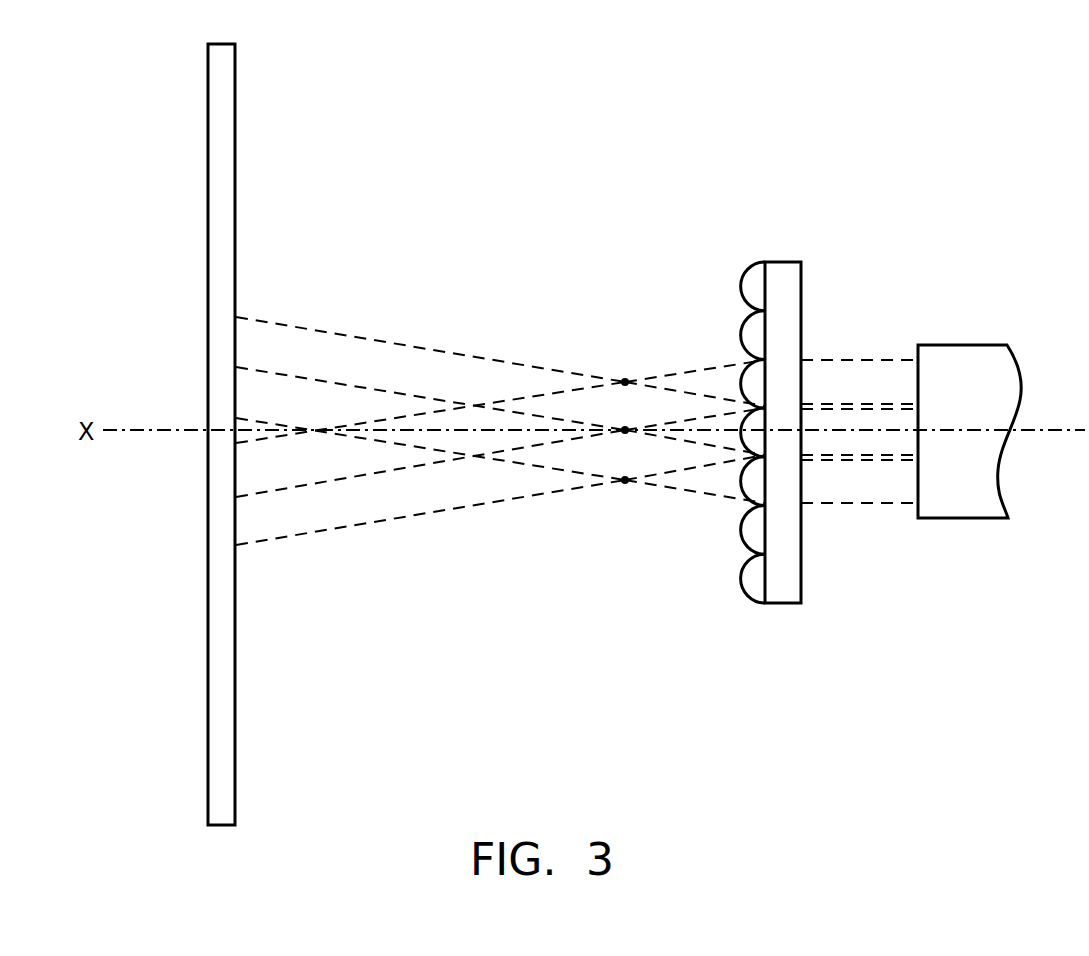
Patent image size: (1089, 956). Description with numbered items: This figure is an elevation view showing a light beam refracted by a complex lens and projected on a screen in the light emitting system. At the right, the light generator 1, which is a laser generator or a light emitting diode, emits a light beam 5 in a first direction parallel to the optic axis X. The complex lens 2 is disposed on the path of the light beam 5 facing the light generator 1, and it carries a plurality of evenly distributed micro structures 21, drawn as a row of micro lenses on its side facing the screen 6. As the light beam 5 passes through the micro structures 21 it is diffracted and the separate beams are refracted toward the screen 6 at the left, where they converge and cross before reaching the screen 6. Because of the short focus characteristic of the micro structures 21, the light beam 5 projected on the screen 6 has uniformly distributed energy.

The light generator 1 is at (965, 355).
The complex lens 2 is at (736, 368).
The micro structures 21 is at (748, 332).
The light beam 5 is at (853, 343).
The screen 6 is at (215, 98).